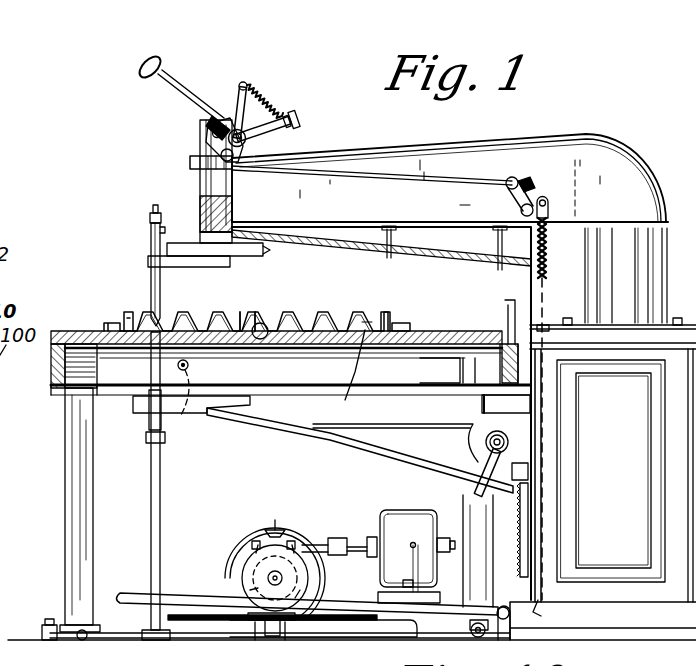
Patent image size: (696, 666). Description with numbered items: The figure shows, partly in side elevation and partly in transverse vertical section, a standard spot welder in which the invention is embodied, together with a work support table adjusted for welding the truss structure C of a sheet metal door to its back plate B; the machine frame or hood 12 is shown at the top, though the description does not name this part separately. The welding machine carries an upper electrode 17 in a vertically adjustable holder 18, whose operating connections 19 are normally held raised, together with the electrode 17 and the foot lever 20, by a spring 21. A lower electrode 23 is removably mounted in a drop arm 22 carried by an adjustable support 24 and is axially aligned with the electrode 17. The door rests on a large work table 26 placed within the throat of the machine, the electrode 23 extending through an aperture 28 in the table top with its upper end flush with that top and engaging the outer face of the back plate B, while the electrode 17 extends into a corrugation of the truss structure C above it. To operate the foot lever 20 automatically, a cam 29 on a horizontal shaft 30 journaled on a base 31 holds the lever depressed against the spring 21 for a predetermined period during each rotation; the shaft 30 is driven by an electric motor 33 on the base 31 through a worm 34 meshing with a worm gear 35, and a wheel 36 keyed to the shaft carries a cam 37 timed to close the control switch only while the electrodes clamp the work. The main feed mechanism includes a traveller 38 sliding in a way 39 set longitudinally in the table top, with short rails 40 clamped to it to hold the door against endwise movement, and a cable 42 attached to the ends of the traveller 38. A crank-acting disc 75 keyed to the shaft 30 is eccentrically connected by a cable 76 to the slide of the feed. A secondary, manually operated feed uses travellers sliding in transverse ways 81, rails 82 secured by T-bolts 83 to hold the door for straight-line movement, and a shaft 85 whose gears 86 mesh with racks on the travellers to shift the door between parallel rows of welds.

The hood 12 is at (613, 148).
The operating connections 19 is at (476, 186).
The spring 21 is at (556, 228).
The vertically adjustable holder 18 is at (222, 250).
The upper electrode 17 is at (150, 288).
The short rails 40 is at (280, 298).
The work table 26 is at (425, 335).
The traveller 38 is at (285, 312).
The way 39 is at (255, 320).
The truss structure C is at (358, 312).
The rails 82 is at (130, 325).
The T-bolts 83 is at (108, 323).
The cable 42 is at (285, 392).
The ways 81 is at (418, 364).
The gears 86 is at (190, 367).
The shaft 85 is at (181, 413).
The lower electrode 23 is at (156, 385).
The aperture 28 is at (150, 345).
The drop arm 22 is at (318, 425).
The electric motor 33 is at (410, 520).
The worm gear 35 is at (322, 542).
The cam 37 is at (285, 540).
The cam 29 is at (262, 548).
The horizontal shaft 30 is at (284, 580).
The worm 34 is at (272, 528).
The wheel 36 is at (245, 600).
The cable 76 is at (245, 612).
The crank-acting disc 75 is at (228, 580).
The base 31 is at (358, 630).
The adjustable support 24 is at (152, 483).
The foot lever 20 is at (520, 608).
The back plate B is at (348, 388).